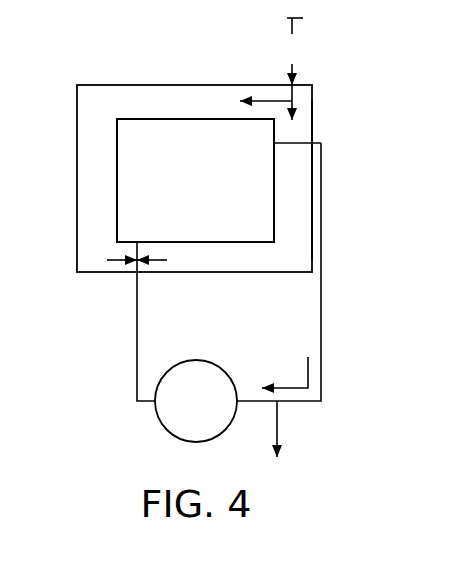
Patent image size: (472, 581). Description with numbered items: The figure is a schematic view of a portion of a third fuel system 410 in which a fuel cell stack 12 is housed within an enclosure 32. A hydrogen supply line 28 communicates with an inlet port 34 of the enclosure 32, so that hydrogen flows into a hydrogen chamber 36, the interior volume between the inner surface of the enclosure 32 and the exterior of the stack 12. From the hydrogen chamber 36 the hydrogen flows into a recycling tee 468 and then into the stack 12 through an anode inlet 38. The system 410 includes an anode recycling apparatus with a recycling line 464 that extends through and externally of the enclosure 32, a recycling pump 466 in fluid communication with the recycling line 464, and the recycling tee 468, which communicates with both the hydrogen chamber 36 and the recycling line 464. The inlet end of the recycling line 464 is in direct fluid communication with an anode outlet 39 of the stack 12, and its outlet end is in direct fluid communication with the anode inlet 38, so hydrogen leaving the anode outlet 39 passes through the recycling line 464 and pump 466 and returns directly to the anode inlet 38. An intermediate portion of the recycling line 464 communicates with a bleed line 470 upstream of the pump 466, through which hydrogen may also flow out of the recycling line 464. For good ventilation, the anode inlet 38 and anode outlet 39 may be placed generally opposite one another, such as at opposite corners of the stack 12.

The third fuel system 410 is at (141, 66).
The fuel cell stack 12 is at (195, 180).
The hydrogen supply line 28 is at (303, 18).
The enclosure 32 is at (312, 85).
The inlet port 34 is at (288, 82).
The hydrogen chamber 36 is at (292, 182).
The anode inlet 38 is at (135, 245).
The anode outlet 39 is at (275, 135).
The recycling line 464 is at (321, 275).
The recycling pump 466 is at (180, 422).
The recycling tee 468 is at (135, 263).
The bleed line 470 is at (278, 413).